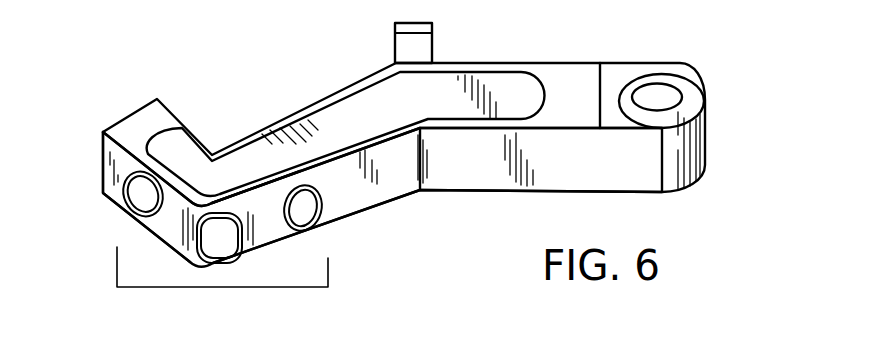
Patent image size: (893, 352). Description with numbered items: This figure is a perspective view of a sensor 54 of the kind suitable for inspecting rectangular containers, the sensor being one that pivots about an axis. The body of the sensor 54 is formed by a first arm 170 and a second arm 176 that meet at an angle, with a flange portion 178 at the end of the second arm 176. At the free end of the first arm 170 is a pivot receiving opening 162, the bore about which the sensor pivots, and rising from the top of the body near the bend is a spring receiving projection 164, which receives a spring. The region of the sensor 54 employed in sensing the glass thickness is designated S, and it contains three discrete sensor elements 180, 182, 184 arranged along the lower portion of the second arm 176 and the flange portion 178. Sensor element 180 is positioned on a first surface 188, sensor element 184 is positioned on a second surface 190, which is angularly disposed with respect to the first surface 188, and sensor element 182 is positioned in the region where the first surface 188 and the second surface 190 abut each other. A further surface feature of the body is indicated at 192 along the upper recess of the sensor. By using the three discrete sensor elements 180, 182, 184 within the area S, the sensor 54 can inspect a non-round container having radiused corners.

The sensor 54 is at (357, 83).
The pivot receiving opening 162 is at (663, 95).
The spring receiving projection 164 is at (423, 53).
The first arm 170 is at (488, 175).
The second arm 176 is at (362, 200).
The flange portion 178 is at (112, 167).
The sensor element 180 is at (303, 220).
The sensor element 182 is at (220, 243).
The sensor element 184 is at (144, 208).
The first surface 188 is at (320, 178).
The second surface 190 is at (177, 206).
The recessed channel 192 is at (229, 205).
The sensing area S is at (218, 287).